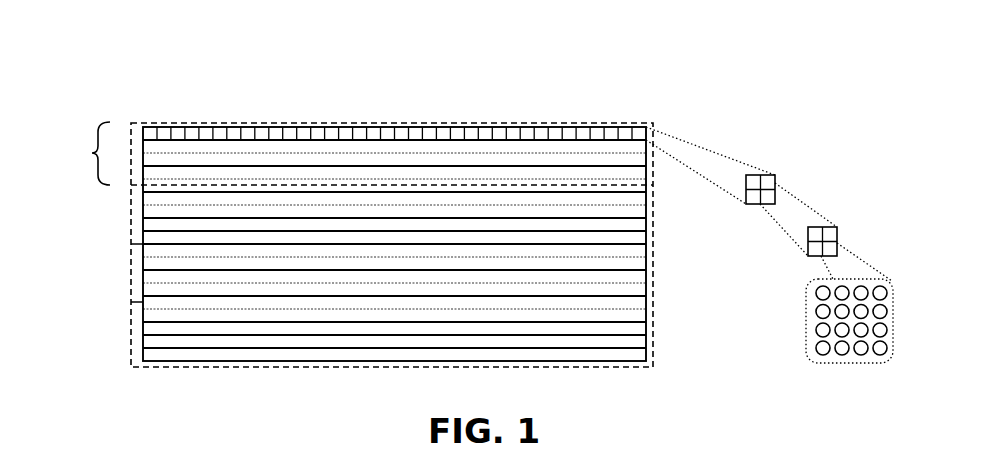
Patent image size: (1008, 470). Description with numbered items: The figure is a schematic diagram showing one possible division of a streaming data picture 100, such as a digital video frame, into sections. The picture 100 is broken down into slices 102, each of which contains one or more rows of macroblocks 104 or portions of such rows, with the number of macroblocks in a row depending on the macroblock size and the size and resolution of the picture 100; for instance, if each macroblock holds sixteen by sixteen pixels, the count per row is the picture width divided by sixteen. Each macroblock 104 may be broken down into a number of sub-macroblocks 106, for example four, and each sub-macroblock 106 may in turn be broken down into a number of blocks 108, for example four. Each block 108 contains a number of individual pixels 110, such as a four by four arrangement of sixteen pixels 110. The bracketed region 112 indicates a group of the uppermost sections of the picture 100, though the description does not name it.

The picture 100 is at (157, 67).
The slice 102 is at (140, 133).
The macroblock 104 is at (749, 153).
The sub-macroblock 106 is at (847, 205).
The block 108 is at (830, 248).
The pixel 110 is at (858, 352).
The display layer stack 112 is at (92, 153).